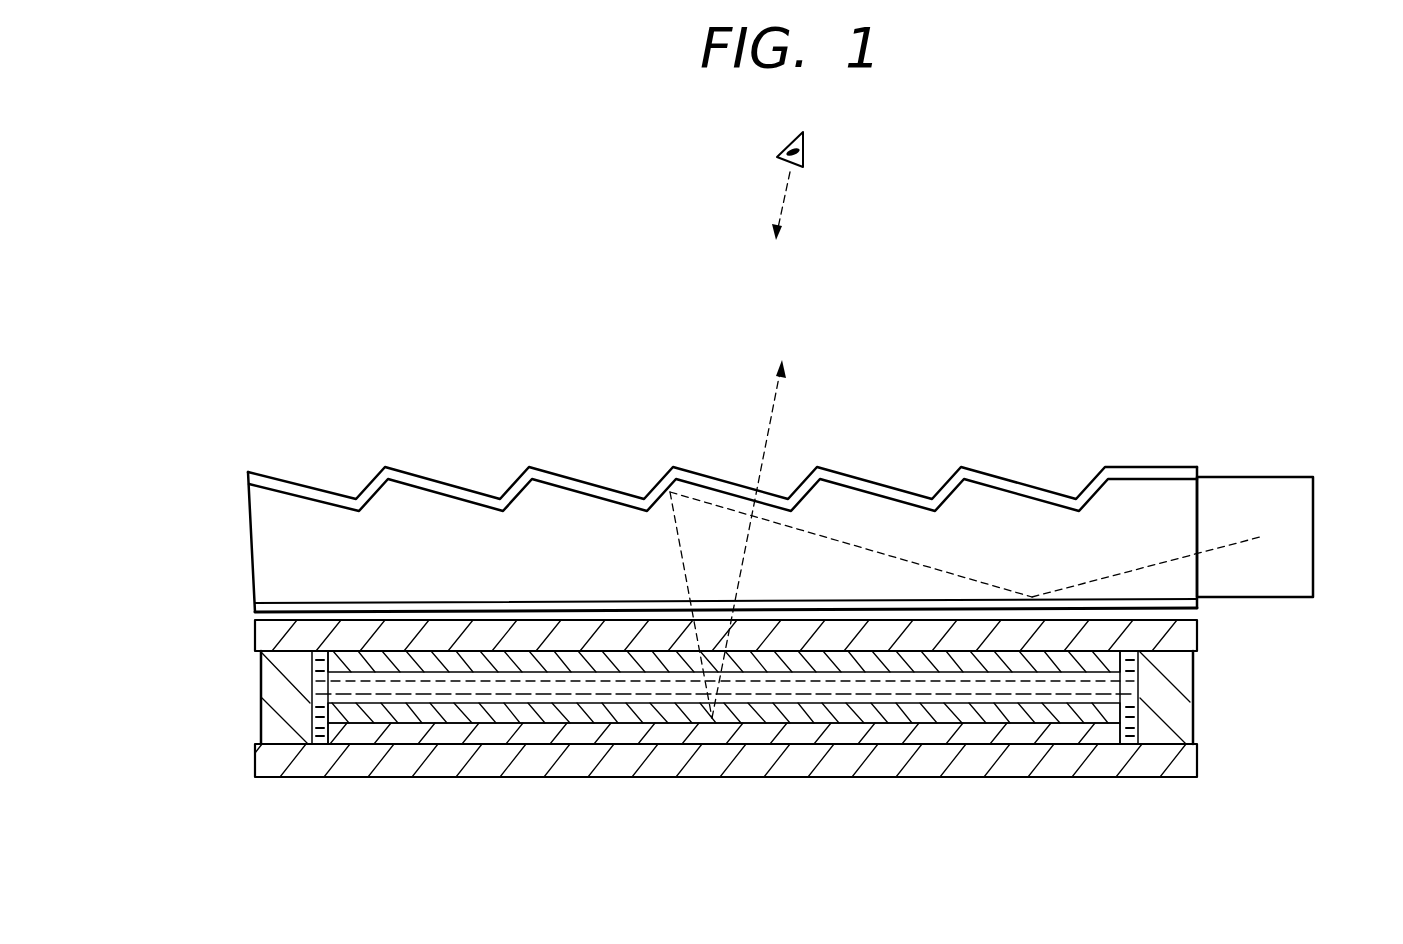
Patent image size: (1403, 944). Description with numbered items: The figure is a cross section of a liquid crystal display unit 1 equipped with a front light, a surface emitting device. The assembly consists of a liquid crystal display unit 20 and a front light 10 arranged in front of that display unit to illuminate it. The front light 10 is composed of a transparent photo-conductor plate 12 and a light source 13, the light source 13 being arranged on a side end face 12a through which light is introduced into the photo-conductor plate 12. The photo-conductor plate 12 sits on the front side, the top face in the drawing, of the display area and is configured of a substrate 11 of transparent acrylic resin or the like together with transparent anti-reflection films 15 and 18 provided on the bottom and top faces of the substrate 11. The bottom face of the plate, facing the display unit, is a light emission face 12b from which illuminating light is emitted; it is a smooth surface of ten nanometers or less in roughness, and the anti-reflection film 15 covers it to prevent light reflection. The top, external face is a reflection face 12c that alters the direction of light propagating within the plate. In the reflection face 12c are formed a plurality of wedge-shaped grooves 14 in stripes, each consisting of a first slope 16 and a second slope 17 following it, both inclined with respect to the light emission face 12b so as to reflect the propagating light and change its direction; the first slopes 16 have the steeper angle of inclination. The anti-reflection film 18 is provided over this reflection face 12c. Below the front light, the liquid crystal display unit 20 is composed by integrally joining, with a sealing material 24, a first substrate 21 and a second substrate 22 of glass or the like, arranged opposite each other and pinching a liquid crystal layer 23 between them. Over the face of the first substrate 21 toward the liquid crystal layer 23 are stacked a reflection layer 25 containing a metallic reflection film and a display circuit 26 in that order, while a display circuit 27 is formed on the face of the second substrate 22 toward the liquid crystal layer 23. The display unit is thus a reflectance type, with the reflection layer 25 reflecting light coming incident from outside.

The liquid crystal display unit 1 is at (1262, 278).
The front light 10 is at (1325, 536).
The substrate 11 is at (277, 517).
The photo-conductor plate 12 is at (1210, 582).
The side end face 12a is at (1197, 528).
The light emission face 12b is at (308, 601).
The reflection face 12c is at (983, 502).
The light source 13 is at (1280, 493).
The wedge-shaped grooves 14 is at (567, 352).
The anti-reflection film 15 is at (385, 603).
The first slope 16 is at (658, 497).
The second slope 17 is at (587, 493).
The anti-reflection film 18 is at (298, 488).
The liquid crystal display unit 20 is at (1212, 752).
The first substrate 21 is at (275, 757).
The second substrate 22 is at (270, 638).
The liquid crystal layer 23 is at (1132, 685).
The sealing material 24 is at (1175, 719).
The reflection layer 25 is at (1098, 733).
The display circuit 26 is at (1053, 712).
The display circuit 27 is at (993, 660).